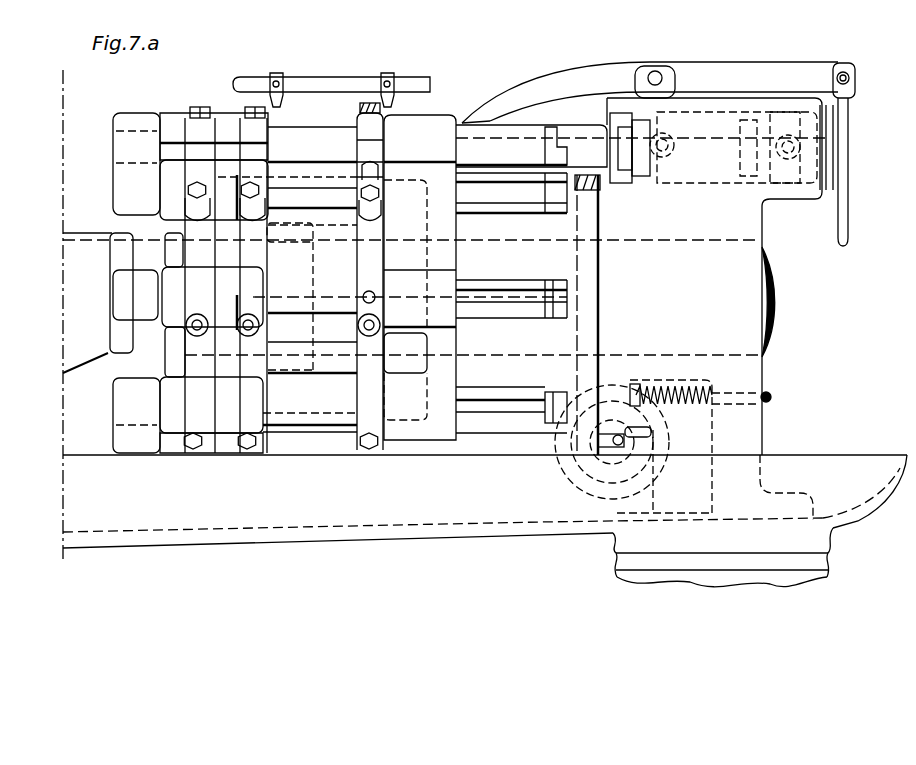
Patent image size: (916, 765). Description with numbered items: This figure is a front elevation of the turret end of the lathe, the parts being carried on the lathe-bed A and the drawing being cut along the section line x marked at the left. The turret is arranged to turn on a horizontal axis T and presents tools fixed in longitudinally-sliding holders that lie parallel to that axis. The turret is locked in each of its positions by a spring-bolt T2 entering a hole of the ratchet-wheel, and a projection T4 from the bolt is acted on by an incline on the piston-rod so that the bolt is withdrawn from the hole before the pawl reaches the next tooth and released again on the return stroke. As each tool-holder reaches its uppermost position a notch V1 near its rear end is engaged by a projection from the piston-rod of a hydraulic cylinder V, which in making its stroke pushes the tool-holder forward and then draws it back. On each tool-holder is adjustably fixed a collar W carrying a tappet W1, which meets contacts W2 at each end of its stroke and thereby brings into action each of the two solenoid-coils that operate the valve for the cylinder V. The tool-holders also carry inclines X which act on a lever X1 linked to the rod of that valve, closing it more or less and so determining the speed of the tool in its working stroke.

The section line x- x is at (58, 314).
The lathe-bed A is at (485, 508).
The horizontal axis T is at (783, 298).
The spring-bolt T2 is at (605, 395).
The projection from the bolt T4 is at (650, 431).
The collar W is at (420, 277).
The tappet W1 is at (365, 438).
The contacts W2 is at (280, 80).
The inclines X is at (528, 127).
The lever X1 is at (658, 154).
The hydraulic cylinder V is at (721, 147).
The notch V1 is at (552, 135).